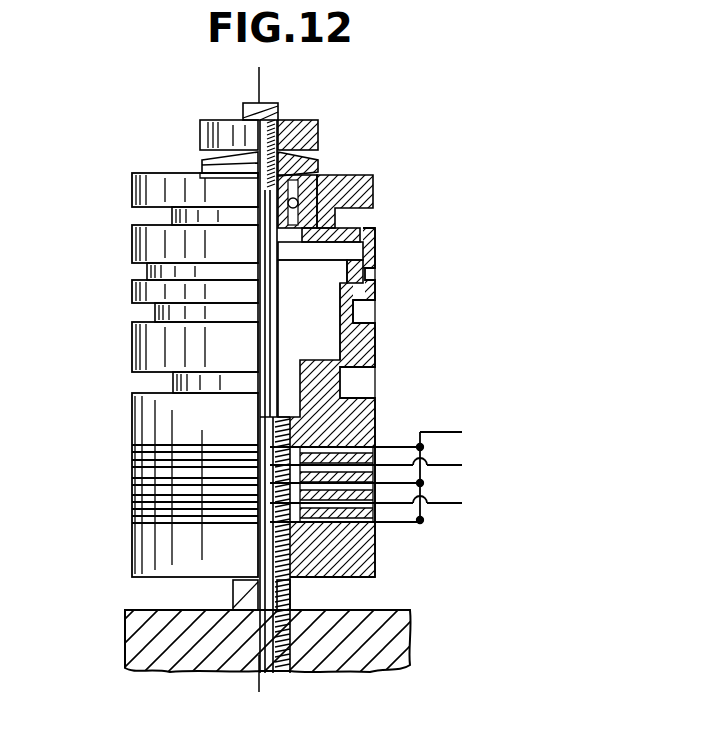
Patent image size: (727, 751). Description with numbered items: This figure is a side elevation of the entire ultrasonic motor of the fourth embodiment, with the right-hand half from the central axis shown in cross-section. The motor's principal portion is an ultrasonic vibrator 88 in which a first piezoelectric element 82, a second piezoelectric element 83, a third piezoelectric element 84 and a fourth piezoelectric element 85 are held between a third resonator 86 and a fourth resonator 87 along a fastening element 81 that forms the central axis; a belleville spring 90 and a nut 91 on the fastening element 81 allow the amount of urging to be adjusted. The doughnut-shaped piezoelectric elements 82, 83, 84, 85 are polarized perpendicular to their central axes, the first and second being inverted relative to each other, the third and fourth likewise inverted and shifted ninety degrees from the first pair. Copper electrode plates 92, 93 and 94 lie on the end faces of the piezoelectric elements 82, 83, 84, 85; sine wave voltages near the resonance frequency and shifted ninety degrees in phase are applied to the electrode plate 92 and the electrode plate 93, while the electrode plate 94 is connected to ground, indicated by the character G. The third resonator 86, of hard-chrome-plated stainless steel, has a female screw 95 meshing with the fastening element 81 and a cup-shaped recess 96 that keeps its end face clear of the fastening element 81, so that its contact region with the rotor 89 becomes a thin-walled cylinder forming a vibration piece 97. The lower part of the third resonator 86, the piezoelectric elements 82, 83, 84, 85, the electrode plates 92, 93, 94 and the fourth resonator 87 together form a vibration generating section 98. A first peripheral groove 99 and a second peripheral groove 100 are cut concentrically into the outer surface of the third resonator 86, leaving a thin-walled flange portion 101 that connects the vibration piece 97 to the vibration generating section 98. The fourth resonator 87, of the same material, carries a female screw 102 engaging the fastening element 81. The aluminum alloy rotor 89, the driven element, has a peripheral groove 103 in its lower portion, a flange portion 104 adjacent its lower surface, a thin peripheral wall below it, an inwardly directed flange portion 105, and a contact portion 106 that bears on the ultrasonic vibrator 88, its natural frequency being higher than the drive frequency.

The fastening element 81 is at (300, 108).
The nut 91 is at (318, 125).
The belleville spring 90 is at (318, 158).
The peripheral groove 103 is at (375, 198).
The flange portion 104 is at (362, 232).
The flange portion 105 is at (372, 250).
The contact portion 106 is at (374, 266).
The recess 96 is at (372, 278).
The first peripheral groove 99 is at (372, 300).
The second peripheral groove 100 is at (372, 322).
The female screw 95 is at (368, 352).
The electrode plate 94 is at (362, 380).
The electrode plate 92 is at (330, 430).
The electrode plate 93 is at (378, 560).
The female screw 102 is at (385, 600).
The thin-walled flange portion 101 is at (303, 396).
The vibration piece 97 is at (480, 273).
The vibration generating section 98 is at (548, 382).
The ultrasonic vibrator 88 is at (605, 600).
The rotor 89 is at (118, 170).
The third resonator 86 is at (124, 442).
The first piezoelectric element 82 is at (48, 530).
The second piezoelectric element 83 is at (132, 472).
The third piezoelectric element 84 is at (132, 495).
The fourth piezoelectric element 85 is at (132, 512).
The fourth resonator 87 is at (130, 520).